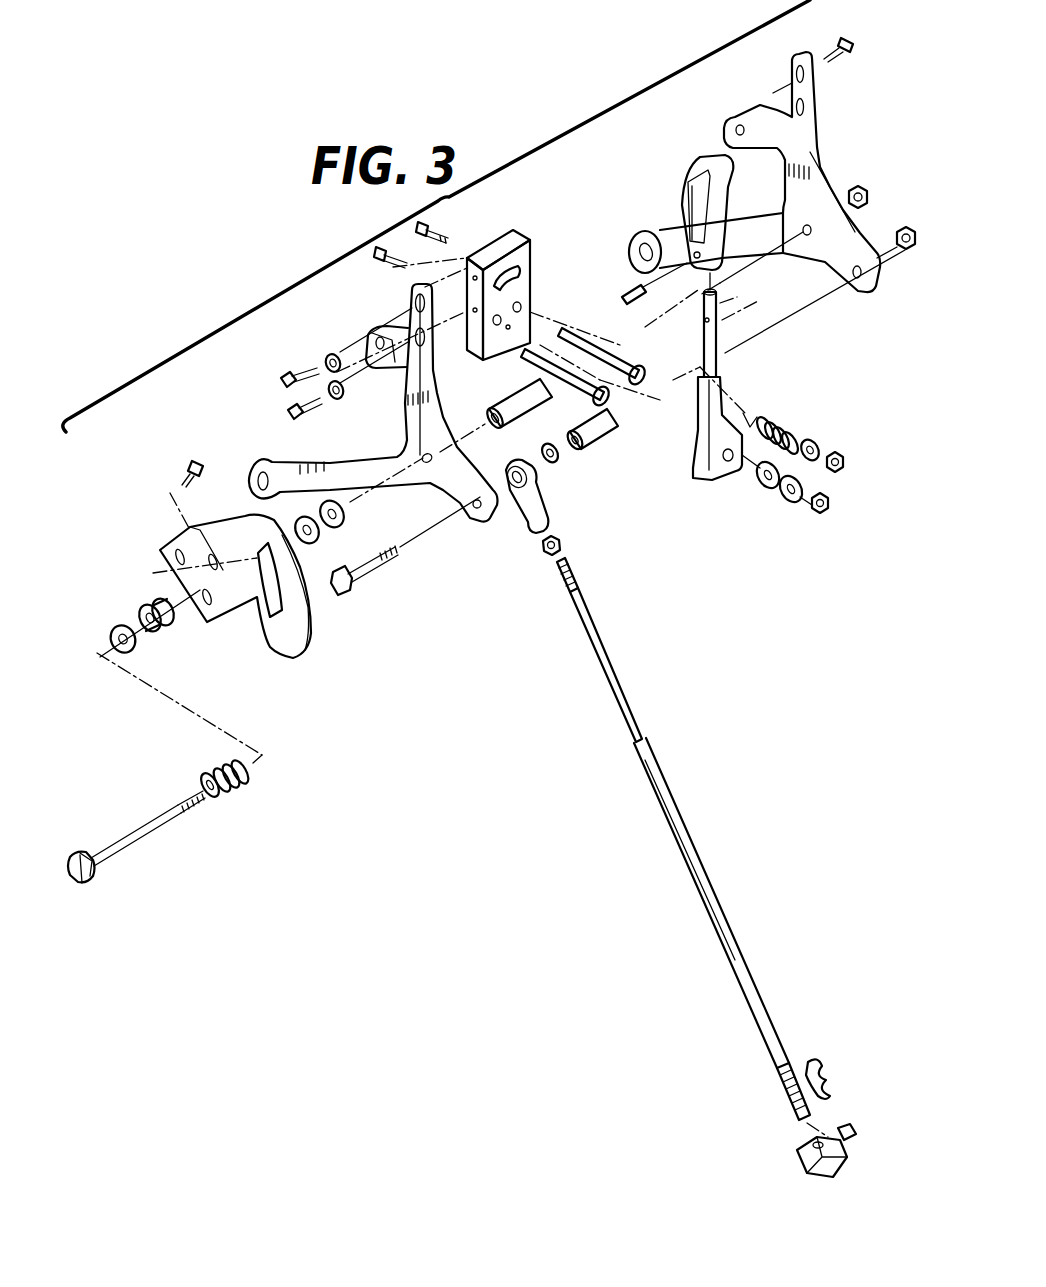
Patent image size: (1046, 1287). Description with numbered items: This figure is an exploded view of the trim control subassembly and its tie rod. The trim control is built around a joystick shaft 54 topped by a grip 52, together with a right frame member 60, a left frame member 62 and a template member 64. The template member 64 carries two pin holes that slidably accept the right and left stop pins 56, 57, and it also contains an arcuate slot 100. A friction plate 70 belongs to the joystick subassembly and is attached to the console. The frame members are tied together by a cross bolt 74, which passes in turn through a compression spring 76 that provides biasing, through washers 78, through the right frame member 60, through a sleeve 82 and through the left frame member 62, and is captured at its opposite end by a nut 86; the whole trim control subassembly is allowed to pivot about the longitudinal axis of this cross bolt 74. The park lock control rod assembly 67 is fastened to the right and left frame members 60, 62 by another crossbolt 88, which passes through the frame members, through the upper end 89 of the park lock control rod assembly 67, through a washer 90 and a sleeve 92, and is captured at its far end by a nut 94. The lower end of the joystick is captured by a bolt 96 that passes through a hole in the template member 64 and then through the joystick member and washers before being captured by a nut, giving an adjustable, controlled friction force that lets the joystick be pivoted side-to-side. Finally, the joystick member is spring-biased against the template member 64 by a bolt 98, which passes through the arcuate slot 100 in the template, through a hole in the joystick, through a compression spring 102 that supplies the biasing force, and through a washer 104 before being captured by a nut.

The grip 52 is at (707, 160).
The joystick shaft 54 is at (717, 393).
The right stop pin 56 is at (570, 388).
The left stop pin 57 is at (630, 357).
The right frame member 60 is at (452, 477).
The left frame member 62 is at (798, 147).
The template member 64 is at (500, 242).
The park lock control rod assembly 67 is at (668, 753).
The friction plate 70 is at (287, 640).
The cross bolt 74 is at (137, 837).
The compression spring 76 is at (235, 790).
The washers 78 is at (115, 601).
The sleeve 82 is at (517, 403).
The nut 86 is at (867, 188).
The crossbolt 88 is at (327, 549).
The upper end 89 is at (522, 508).
The washer 90 is at (555, 470).
The sleeve 92 is at (607, 430).
The nut 94 is at (917, 230).
The bolt 96 is at (378, 260).
The bolt 98 is at (418, 236).
The arcuate slot 100 is at (517, 253).
The compression spring 102 is at (783, 417).
The washer 104 is at (817, 443).